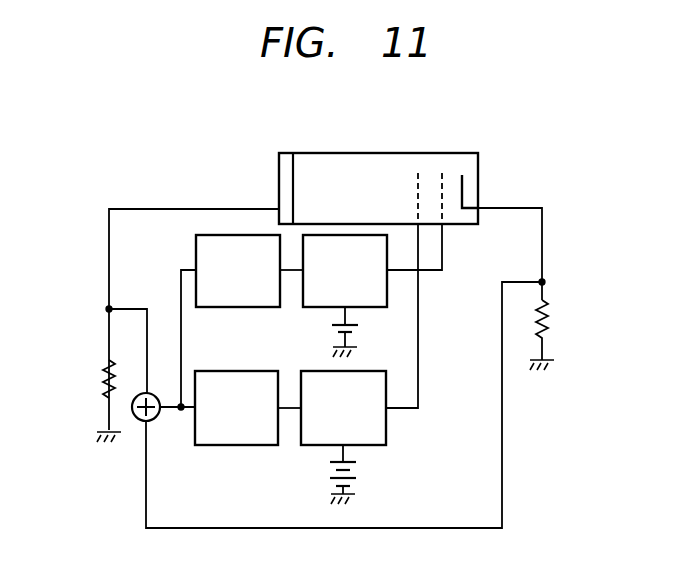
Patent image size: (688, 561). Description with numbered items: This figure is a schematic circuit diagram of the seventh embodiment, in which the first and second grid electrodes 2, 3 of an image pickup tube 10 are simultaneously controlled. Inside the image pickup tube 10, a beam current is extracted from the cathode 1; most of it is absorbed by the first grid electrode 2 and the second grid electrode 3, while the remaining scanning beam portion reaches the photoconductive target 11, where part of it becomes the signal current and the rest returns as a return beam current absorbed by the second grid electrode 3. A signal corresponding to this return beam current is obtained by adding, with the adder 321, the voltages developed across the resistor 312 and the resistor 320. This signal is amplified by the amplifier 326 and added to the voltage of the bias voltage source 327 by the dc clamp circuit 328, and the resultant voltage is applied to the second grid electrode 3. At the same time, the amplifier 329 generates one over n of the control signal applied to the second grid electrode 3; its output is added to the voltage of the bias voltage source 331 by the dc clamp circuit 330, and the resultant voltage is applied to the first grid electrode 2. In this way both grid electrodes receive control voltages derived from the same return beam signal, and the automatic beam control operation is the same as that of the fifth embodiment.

The cathode 1 is at (462, 175).
The first grid electrode 2 is at (442, 173).
The second grid electrode 3 is at (418, 173).
The image pickup tube 10 is at (357, 155).
The photoconductive target 11 is at (283, 153).
The resistor 312 is at (100, 375).
The resistor 320 is at (552, 323).
The adder 321 is at (156, 418).
The amplifier 326 is at (225, 447).
The bias voltage source 327 is at (359, 469).
The dc clamp circuit 328 is at (308, 447).
The amplifier 329 is at (225, 309).
The dc clamp circuit 330 is at (311, 309).
The bias voltage source 331 is at (358, 328).